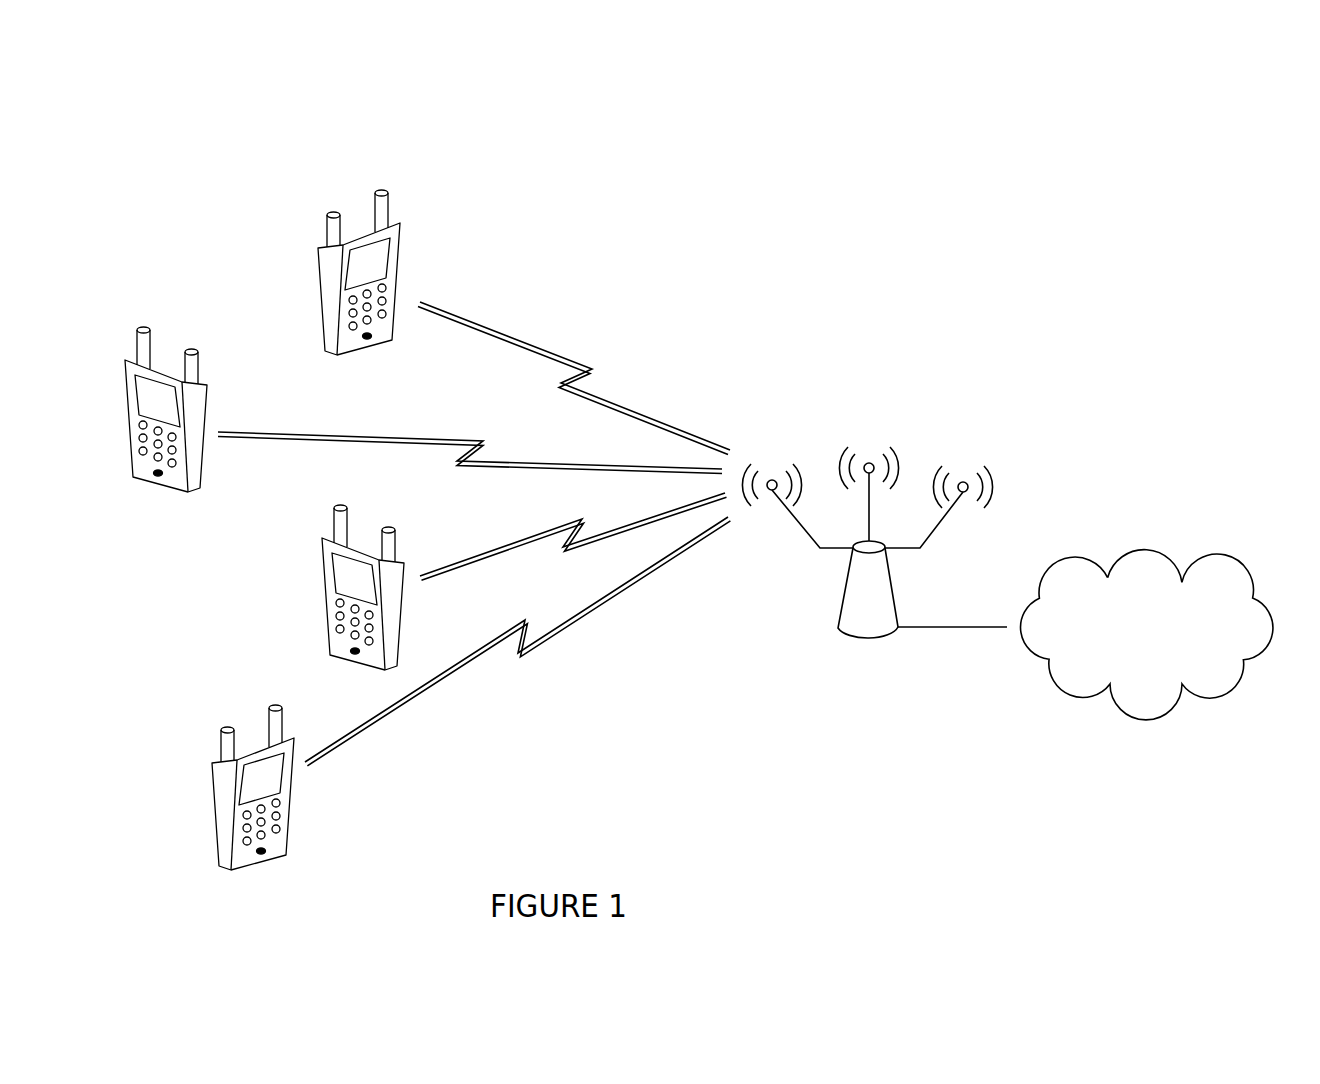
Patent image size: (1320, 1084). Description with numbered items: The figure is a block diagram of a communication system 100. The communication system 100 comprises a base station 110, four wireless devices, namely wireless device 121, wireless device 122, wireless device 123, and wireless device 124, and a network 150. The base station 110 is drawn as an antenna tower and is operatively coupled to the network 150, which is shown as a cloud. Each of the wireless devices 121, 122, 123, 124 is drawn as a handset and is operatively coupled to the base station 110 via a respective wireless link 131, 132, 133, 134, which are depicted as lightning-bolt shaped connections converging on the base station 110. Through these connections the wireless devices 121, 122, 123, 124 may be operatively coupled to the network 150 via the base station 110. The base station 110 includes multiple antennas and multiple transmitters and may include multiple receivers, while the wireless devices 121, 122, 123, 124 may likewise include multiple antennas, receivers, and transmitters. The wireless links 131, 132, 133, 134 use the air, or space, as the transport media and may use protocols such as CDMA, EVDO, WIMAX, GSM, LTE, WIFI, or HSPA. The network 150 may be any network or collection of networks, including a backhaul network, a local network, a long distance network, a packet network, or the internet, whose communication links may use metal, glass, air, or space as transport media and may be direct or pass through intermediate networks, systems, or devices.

The communication system 100 is at (750, 105).
The base station 110 is at (860, 645).
The wireless device 121 is at (332, 357).
The wireless device 122 is at (368, 665).
The wireless device 123 is at (185, 493).
The wireless device 124 is at (278, 852).
The wireless link 131 is at (657, 413).
The wireless link 132 is at (633, 520).
The wireless link 133 is at (618, 460).
The wireless link 134 is at (593, 595).
The network 150 is at (1121, 662).